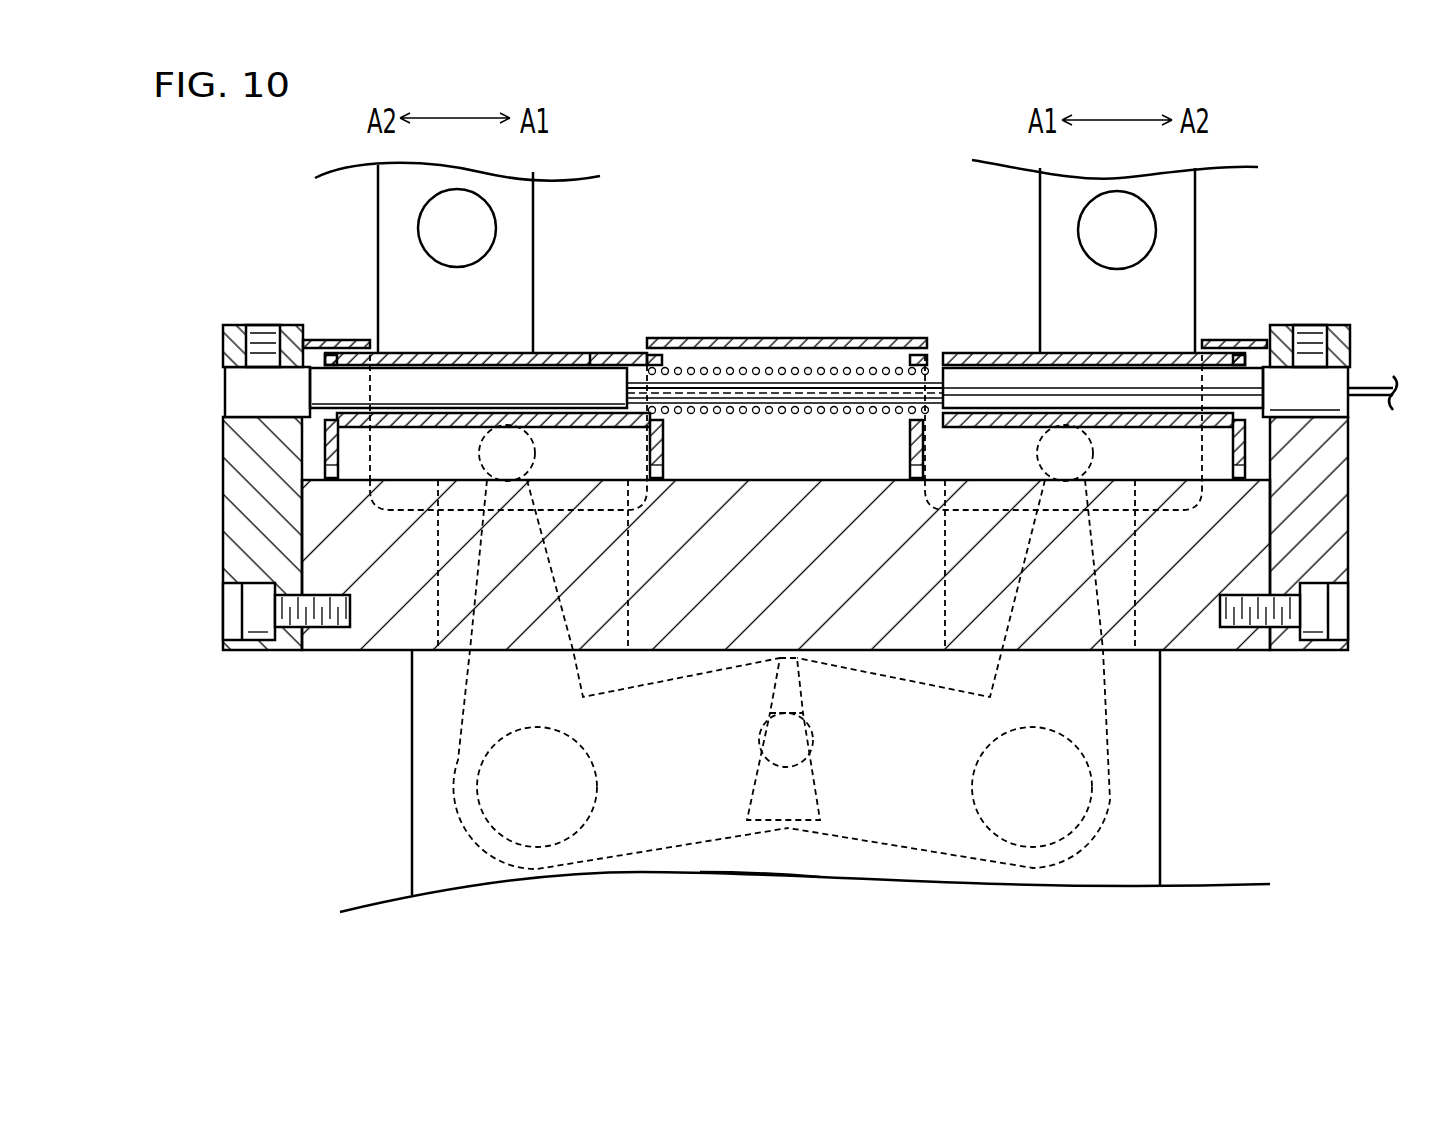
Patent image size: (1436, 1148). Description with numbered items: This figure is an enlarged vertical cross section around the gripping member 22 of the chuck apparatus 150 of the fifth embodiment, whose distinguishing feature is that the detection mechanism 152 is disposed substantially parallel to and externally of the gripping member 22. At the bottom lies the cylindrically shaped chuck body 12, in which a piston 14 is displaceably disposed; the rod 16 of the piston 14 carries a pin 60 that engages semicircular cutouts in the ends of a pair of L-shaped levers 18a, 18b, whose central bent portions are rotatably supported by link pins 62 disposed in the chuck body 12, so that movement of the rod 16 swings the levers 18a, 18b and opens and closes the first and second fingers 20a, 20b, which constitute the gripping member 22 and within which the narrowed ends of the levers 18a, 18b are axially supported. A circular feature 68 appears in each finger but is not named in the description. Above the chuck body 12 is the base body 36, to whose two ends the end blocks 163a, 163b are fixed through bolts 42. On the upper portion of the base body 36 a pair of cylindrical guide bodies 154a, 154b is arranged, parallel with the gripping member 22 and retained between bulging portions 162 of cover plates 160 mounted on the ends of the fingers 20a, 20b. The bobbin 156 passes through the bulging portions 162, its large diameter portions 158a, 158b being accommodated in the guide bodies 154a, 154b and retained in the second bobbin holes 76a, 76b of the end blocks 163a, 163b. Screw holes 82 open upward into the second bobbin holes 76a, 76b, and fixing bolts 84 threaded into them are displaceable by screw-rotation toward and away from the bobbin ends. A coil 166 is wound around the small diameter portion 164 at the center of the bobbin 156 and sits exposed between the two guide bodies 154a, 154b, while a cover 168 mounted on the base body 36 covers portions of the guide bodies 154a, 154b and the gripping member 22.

The chuck apparatus 150 is at (1390, 178).
The gripping member 22 is at (567, 213).
The first finger 20a is at (364, 220).
The second finger 20b is at (1209, 212).
The through hole 68 is at (536, 248).
The base body 36 is at (1243, 648).
The end block 163a is at (237, 523).
The end block 163b is at (1330, 522).
The bolt 42 is at (255, 617).
The second bobbin hole 76a is at (226, 372).
The second bobbin hole 76b is at (1352, 368).
The large diameter portion 158a is at (248, 398).
The large diameter portion 158b is at (1340, 405).
The screw hole 82 is at (248, 325).
The fixing bolt 84 is at (264, 325).
The guide body 154a is at (411, 345).
The bobbin 156 is at (596, 354).
The guide body 154b is at (1164, 346).
The cover plate 160 is at (325, 455).
The detection mechanism 152 is at (785, 326).
The bulging portion 162 is at (330, 340).
The cover 168 is at (707, 340).
The small diameter portion 164 is at (745, 381).
The coil 166 is at (883, 356).
The chuck body 12 is at (1167, 726).
The piston 14 is at (759, 883).
The rod 16 is at (830, 873).
The lever 18a is at (455, 812).
The lever 18b is at (1120, 820).
The link pin 62 is at (480, 767).
The pin 60 is at (758, 740).